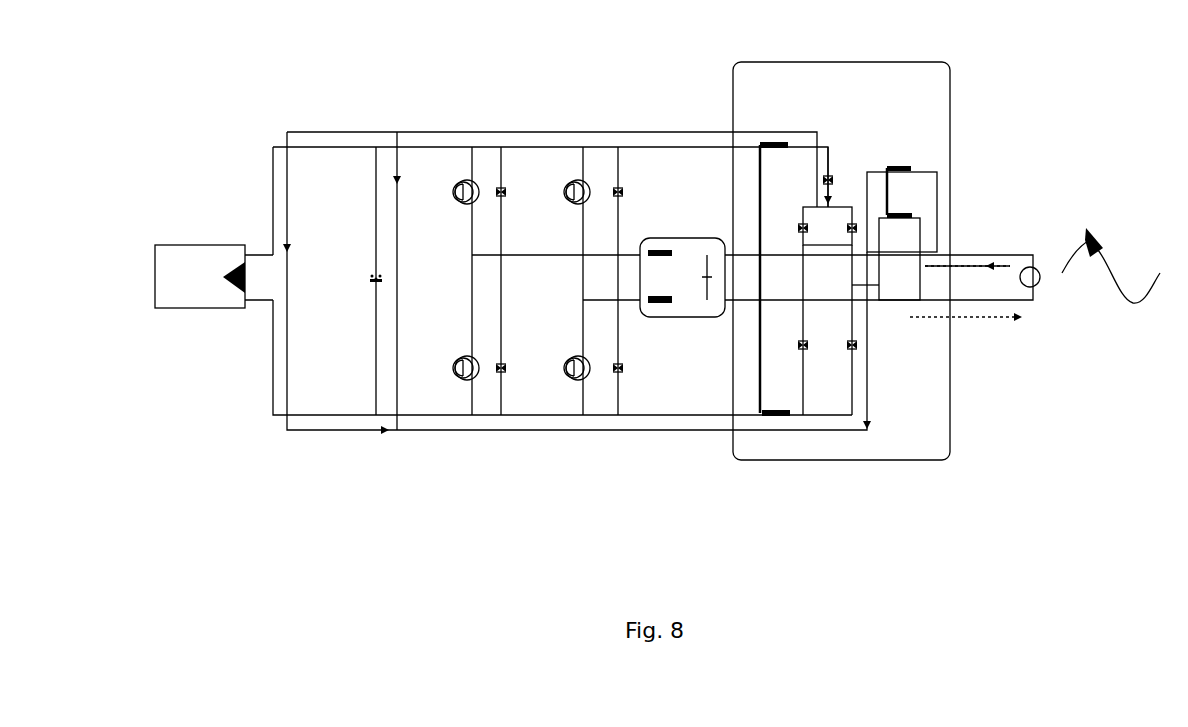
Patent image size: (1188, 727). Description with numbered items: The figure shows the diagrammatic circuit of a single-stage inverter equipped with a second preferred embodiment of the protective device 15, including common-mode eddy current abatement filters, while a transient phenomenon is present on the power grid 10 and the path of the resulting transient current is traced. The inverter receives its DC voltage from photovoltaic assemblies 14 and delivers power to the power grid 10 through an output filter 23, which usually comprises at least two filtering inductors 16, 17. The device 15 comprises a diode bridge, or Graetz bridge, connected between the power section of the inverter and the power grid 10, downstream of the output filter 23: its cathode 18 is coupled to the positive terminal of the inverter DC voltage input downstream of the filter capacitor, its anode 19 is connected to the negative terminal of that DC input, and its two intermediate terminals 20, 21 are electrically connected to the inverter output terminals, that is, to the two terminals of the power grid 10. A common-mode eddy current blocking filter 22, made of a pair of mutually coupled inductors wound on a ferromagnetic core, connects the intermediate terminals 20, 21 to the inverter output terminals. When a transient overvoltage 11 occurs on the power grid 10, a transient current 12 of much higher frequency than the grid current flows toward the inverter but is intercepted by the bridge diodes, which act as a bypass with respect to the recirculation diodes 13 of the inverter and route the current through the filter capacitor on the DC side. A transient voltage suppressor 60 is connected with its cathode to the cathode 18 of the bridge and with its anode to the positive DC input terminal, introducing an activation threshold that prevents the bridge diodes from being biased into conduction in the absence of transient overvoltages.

The power grid 10 is at (1040, 287).
The transient overvoltage 11 is at (1100, 237).
The transient current 12 is at (972, 263).
The recirculation diodes 13 is at (615, 190).
The photovoltaic assemblies 14 is at (205, 264).
The device 15 is at (910, 425).
The filtering inductor 16 is at (652, 246).
The filtering inductor 17 is at (678, 300).
The cathode 18 is at (823, 233).
The anode 19 is at (797, 413).
The intermediate terminal 20 is at (835, 215).
The intermediate terminal 21 is at (853, 287).
The common-mode eddy current blocking filter 22 is at (912, 172).
The output filter 23 is at (700, 314).
The transient voltage suppressor 60 is at (820, 180).